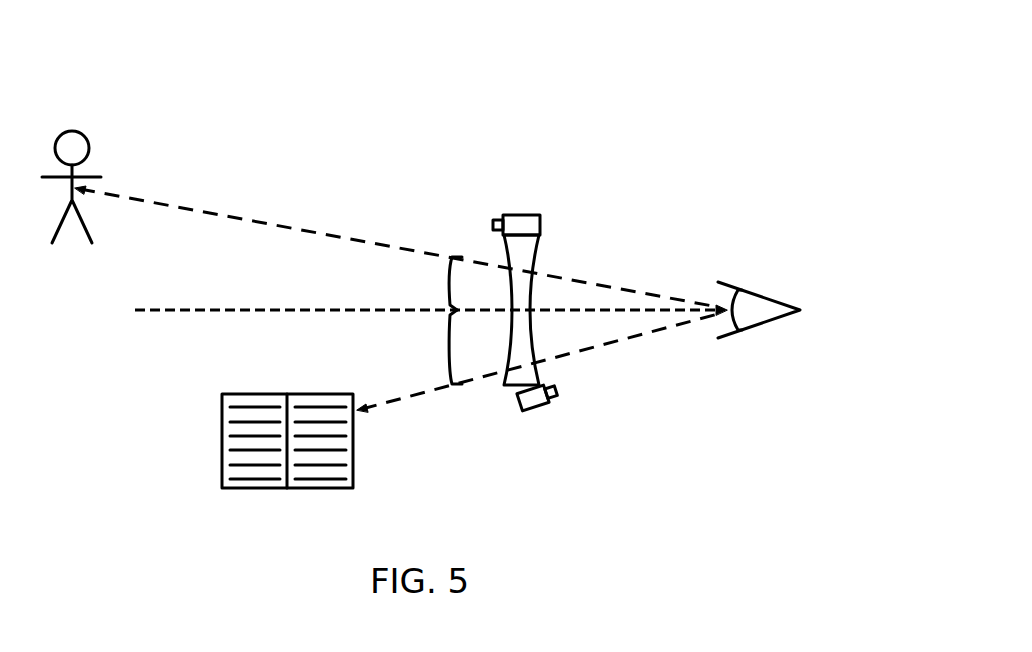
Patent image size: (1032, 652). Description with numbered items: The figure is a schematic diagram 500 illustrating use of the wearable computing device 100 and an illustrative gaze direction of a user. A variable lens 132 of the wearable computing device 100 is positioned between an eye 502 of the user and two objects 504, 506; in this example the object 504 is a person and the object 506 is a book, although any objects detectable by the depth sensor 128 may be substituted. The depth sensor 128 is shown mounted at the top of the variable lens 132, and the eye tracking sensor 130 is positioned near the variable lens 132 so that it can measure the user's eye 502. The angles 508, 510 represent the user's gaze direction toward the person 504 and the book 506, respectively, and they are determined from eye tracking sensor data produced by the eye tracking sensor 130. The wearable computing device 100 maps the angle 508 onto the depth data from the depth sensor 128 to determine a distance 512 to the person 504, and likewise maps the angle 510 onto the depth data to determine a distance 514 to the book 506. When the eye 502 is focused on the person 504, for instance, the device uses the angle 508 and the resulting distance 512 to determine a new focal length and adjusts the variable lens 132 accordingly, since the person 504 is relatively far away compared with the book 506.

The schematic diagram 500 is at (856, 109).
The wearable computing device 100 is at (604, 193).
The depth sensor 128 is at (530, 214).
The eye tracking sensor 130 is at (531, 411).
The variable lens 132 is at (536, 260).
The eye 502 is at (770, 320).
The object (person) 504 is at (74, 131).
The object (book) 506 is at (242, 490).
The angle 508 is at (448, 283).
The angle 510 is at (448, 352).
The distance 512 is at (340, 236).
The distance 514 is at (434, 392).